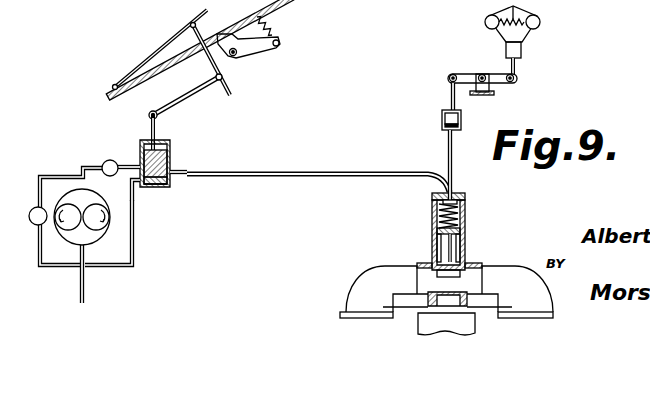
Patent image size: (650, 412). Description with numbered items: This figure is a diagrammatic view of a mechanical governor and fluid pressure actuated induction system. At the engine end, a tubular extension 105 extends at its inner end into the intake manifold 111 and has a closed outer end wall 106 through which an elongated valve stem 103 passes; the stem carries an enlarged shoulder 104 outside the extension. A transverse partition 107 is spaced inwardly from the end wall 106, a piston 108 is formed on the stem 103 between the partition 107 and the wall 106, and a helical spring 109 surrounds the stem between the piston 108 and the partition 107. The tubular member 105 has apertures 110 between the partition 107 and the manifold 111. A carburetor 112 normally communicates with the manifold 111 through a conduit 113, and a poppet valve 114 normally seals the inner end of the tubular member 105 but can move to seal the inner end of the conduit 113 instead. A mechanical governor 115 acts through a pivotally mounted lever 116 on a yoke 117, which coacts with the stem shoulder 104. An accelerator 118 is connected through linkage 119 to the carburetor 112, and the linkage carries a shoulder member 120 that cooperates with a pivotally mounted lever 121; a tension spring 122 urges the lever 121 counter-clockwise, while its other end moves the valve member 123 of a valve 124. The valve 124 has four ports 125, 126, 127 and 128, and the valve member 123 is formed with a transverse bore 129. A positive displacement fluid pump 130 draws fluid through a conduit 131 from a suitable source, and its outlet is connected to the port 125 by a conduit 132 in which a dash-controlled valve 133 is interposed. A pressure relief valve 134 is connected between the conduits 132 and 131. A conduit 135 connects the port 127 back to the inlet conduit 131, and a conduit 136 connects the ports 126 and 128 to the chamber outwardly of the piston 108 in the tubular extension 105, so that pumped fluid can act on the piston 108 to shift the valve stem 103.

The valve stem 103 is at (470, 161).
The enlarged shoulder 104 is at (469, 120).
The tubular extension 105 is at (468, 235).
The closed outer end wall 106 is at (461, 187).
The transverse partition 107 is at (473, 243).
The piston 108 is at (473, 195).
The helical spring 109 is at (425, 216).
The apertures 110 is at (449, 248).
The intake manifold 111 is at (446, 284).
The carburetor 112 is at (426, 324).
The conduit 113 is at (471, 314).
The poppet valve 114 is at (474, 279).
The mechanical governor 115 is at (531, 40).
The pivotally mounted lever 116 is at (482, 74).
The yoke 117 is at (435, 98).
The accelerator 118 is at (160, 50).
The linkage 119 is at (229, 59).
The shoulder member 120 is at (239, 70).
The pivotally mounted lever 121 is at (184, 98).
The tension spring 122 is at (260, 35).
The valve member 123 is at (176, 156).
The valve 124 is at (174, 154).
The port 125 is at (128, 154).
The port 126 is at (191, 162).
The port 127 is at (144, 200).
The port 128 is at (175, 191).
The transverse bore 129 is at (164, 206).
The positive displacement fluid pump 130 is at (77, 226).
The conduit 131 is at (65, 274).
The conduit 132 is at (71, 201).
The valve 133 is at (110, 149).
The pressure relief valve 134 is at (26, 231).
The conduit 135 is at (125, 237).
The conduit 136 is at (318, 174).